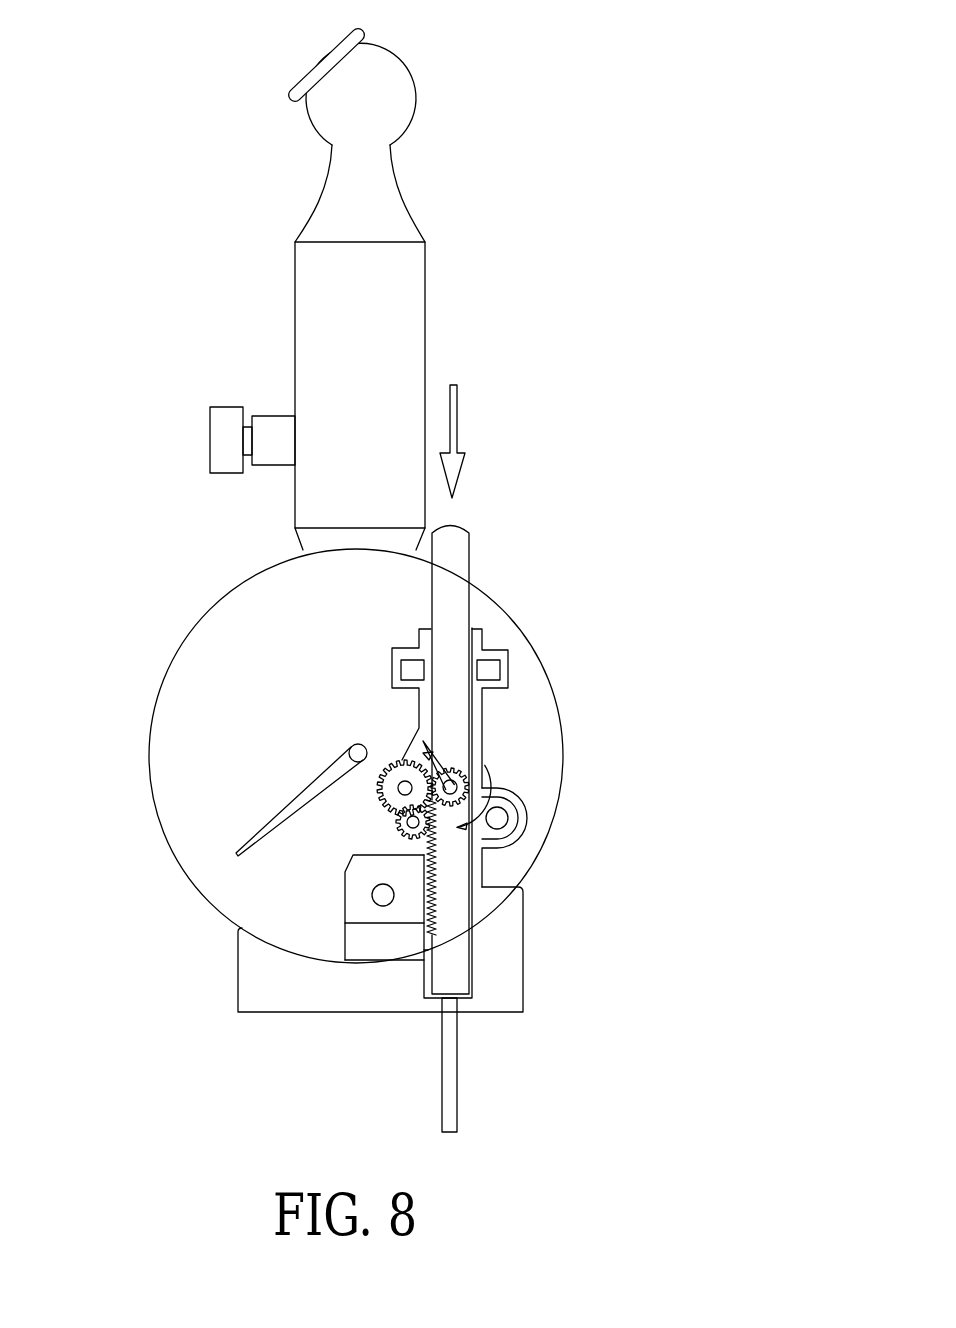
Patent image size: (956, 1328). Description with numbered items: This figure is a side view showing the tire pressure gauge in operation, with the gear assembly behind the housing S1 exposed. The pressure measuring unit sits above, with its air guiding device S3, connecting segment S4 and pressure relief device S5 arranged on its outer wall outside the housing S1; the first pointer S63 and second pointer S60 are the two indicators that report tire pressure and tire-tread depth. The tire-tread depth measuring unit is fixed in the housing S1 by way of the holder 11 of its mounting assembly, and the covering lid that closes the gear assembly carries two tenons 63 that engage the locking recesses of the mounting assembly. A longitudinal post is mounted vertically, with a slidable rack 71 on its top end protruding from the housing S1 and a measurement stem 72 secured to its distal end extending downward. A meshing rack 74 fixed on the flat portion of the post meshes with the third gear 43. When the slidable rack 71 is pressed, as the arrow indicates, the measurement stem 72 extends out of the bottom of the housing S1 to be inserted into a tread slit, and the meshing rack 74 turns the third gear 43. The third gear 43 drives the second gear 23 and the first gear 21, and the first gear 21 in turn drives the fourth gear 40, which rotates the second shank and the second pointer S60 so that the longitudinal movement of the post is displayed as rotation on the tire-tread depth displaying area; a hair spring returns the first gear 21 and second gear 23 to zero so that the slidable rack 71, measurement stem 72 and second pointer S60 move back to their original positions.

The housing S1 is at (212, 656).
The air guiding device S3 is at (377, 308).
The connecting segment S4 is at (318, 62).
The pressure relief device S5 is at (230, 435).
The second pointer S60 is at (423, 753).
The first pointer S63 is at (310, 793).
The holder 11 is at (270, 982).
The first gear 21 is at (377, 795).
The second gear 23 is at (430, 803).
The fourth gear 40 is at (467, 777).
The third gear 43 is at (380, 837).
The tenons 63 is at (493, 668).
The slidable rack 71 is at (447, 603).
The measurement stem 72 is at (448, 1067).
The meshing rack 74 is at (425, 865).